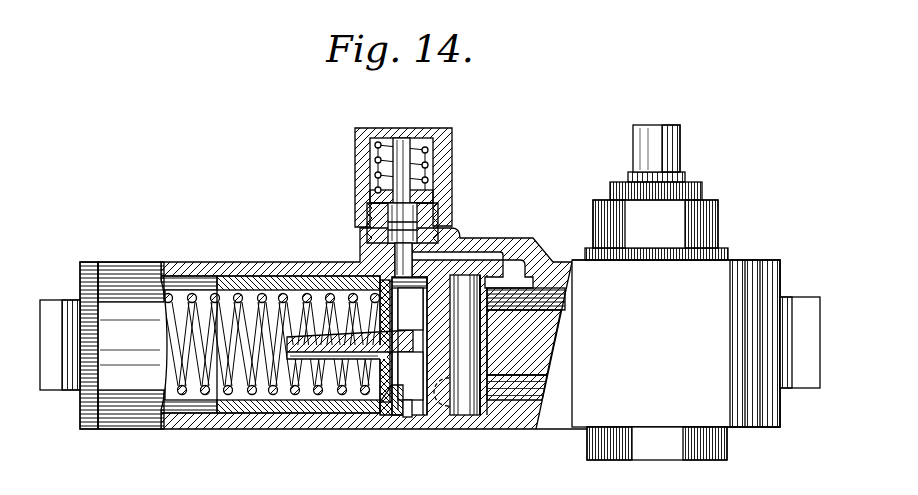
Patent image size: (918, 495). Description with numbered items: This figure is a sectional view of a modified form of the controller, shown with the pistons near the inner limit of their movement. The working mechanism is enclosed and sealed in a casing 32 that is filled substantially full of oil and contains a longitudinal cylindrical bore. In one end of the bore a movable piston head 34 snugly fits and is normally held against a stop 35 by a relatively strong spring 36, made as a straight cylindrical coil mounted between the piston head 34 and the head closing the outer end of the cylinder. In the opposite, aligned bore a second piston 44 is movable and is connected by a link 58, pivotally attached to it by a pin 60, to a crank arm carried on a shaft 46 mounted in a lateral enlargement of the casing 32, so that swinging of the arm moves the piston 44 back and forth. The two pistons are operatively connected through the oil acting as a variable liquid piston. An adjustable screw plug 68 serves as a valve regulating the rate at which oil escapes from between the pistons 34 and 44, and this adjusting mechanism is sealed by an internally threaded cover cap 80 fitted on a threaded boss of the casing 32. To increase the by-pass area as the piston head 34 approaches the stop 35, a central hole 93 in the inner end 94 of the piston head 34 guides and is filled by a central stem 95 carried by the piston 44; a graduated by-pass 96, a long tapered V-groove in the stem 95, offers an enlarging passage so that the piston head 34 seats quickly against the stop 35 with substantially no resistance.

The casing 32 is at (128, 268).
The piston head 34 is at (259, 283).
The stop 35 is at (403, 404).
The spring 36 is at (240, 295).
The piston 44 is at (440, 285).
The shaft 46 is at (675, 163).
The link 58 is at (522, 362).
The pin 60 is at (463, 413).
The adjustable screw plug 68 is at (395, 253).
The cover cap 80 is at (360, 200).
The central hole 93 is at (409, 376).
The inner end of the piston 94 is at (380, 393).
The central stem 95 is at (293, 338).
The graduated by-pass 96 is at (409, 309).